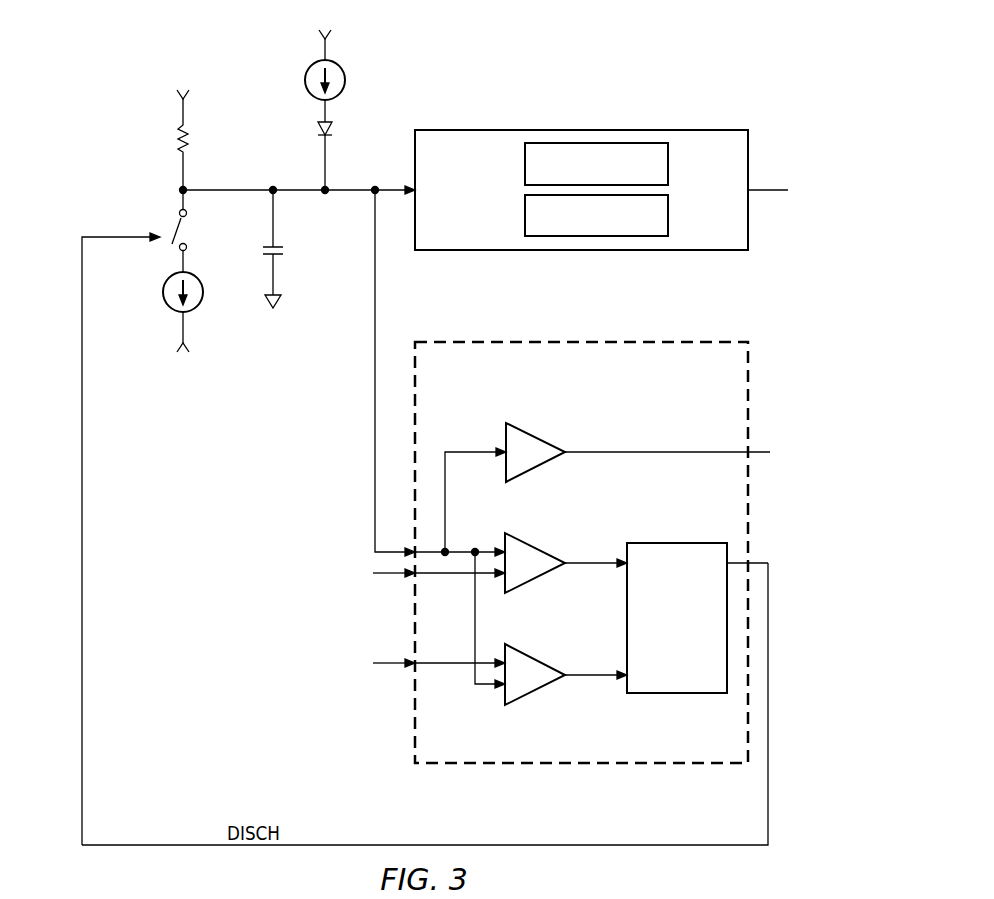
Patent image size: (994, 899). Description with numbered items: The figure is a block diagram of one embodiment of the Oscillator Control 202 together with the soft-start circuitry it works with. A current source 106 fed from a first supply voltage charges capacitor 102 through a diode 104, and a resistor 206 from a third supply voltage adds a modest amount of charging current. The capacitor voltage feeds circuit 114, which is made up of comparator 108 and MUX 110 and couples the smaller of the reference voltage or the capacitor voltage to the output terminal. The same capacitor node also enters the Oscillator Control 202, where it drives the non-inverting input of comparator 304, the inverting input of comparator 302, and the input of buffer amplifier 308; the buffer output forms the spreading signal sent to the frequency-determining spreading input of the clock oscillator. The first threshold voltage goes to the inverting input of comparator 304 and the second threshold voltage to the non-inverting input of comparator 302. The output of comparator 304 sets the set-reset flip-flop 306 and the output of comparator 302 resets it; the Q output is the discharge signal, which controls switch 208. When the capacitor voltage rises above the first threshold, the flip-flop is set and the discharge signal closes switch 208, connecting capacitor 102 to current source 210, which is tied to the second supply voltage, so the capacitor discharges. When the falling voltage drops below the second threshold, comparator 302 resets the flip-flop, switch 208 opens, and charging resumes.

The capacitor 102 is at (270, 246).
The diode D1 104 is at (318, 128).
The current source 106 is at (305, 80).
The comparator 108 is at (669, 164).
The multiplexer 110 is at (669, 218).
The circuit 114 is at (446, 200).
The Oscillator Control 202 is at (712, 330).
The resistor 206 is at (178, 138).
The switch 208 is at (173, 228).
The current source 210 is at (163, 292).
The comparator 302 is at (540, 695).
The comparator 304 is at (540, 583).
The set-reset flip-flop 306 is at (677, 694).
The buffer amplifier 308 is at (535, 437).